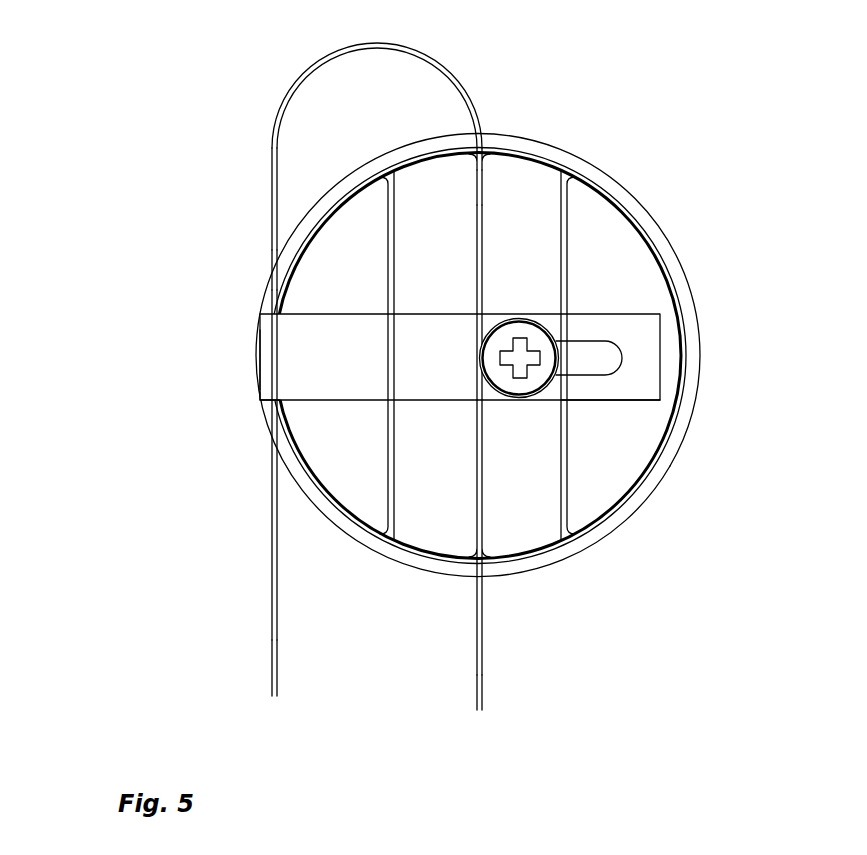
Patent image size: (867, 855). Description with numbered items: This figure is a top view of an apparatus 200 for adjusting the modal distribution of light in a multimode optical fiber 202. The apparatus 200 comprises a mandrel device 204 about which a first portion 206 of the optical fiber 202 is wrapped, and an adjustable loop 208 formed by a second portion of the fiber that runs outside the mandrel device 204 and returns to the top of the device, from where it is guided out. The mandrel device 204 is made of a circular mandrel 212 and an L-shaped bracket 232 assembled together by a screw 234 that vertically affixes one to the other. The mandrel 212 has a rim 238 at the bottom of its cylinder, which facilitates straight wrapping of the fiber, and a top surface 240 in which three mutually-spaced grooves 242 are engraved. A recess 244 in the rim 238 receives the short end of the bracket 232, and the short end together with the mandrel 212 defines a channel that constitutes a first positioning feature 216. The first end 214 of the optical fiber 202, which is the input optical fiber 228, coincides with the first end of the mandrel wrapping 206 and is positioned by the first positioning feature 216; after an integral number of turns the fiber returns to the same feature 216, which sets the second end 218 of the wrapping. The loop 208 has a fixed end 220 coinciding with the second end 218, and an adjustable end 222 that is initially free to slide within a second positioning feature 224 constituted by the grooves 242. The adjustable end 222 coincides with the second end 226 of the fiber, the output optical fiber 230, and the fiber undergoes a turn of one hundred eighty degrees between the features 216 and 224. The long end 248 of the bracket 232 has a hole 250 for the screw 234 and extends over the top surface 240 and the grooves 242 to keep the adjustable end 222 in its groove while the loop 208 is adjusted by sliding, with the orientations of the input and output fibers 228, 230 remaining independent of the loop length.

The apparatus 200 is at (469, 378).
The multimode optical fiber 202 is at (478, 115).
The mandrel device 204 is at (675, 252).
The first portion of the optical fiber 206 is at (685, 380).
The adjustable loop 208 is at (422, 52).
The circular mandrel 212 is at (673, 425).
The first end of the optical fiber 214 is at (272, 612).
The first positioning feature 216 is at (272, 305).
The second end of the mandrel wrapping 218 is at (275, 268).
The fixed end of the adjustable loop 220 is at (275, 230).
The adjustable end of the loop 222 is at (480, 217).
The second positioning feature 224 is at (480, 190).
The second end of the multimode optical fiber 226 is at (482, 652).
The input optical fiber 228 is at (272, 670).
The output optical fiber 230 is at (482, 698).
The L-shaped bracket 232 is at (258, 371).
The screw 234 is at (515, 316).
The rim 238 is at (642, 495).
The top surface 240 is at (586, 442).
The grooves 242 is at (393, 503).
The recess 244 is at (263, 402).
The long end of the bracket 248 is at (377, 358).
The hole 250 is at (608, 353).